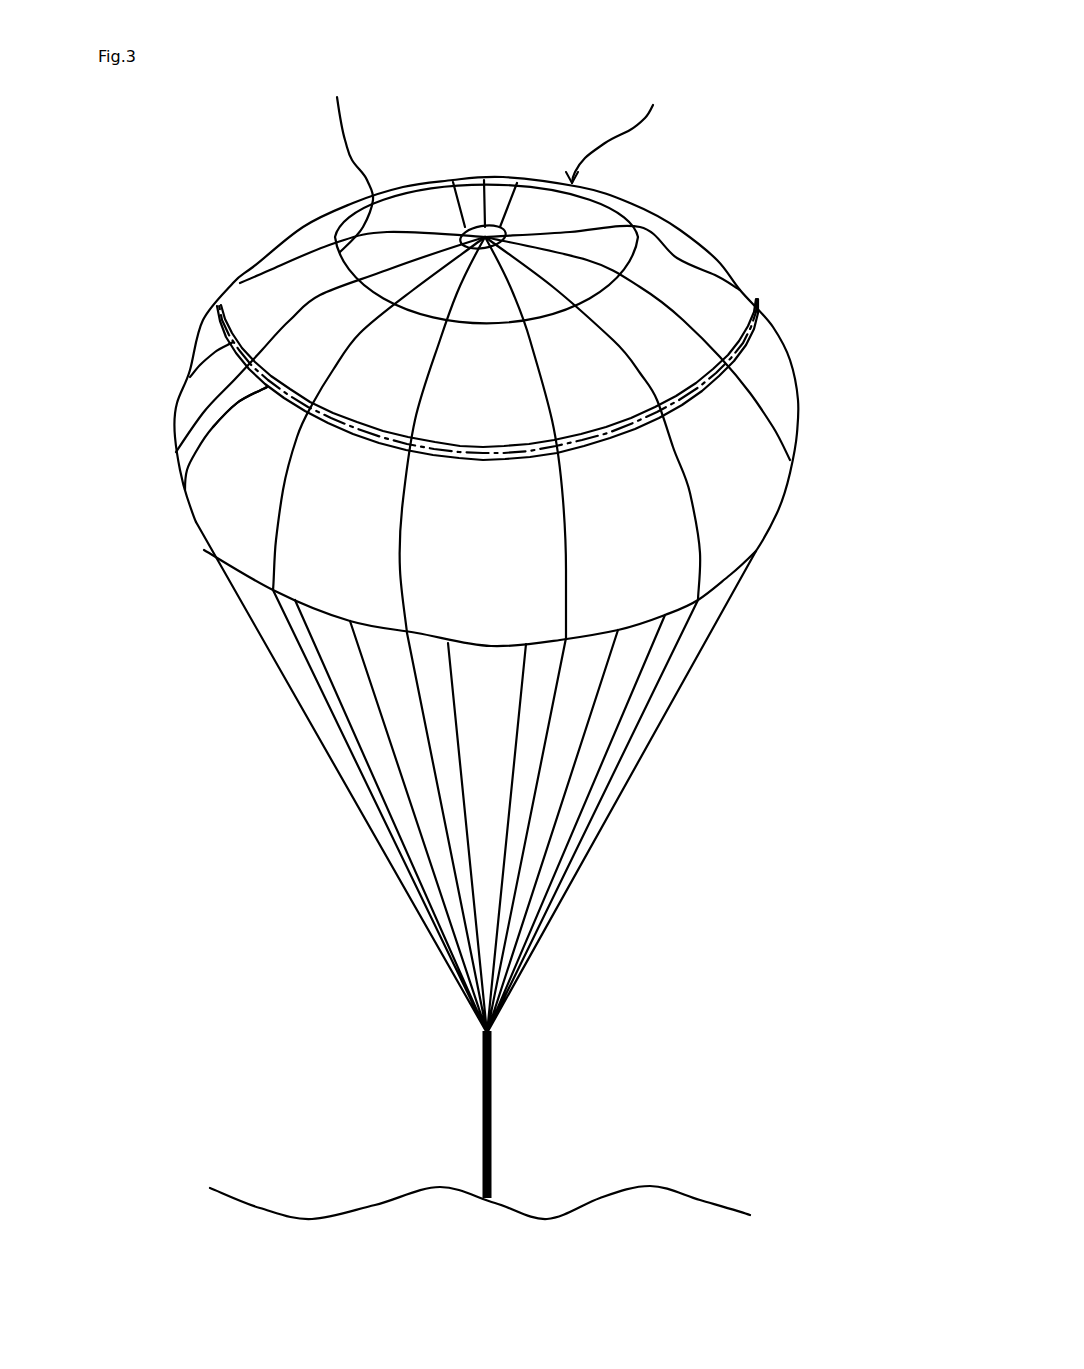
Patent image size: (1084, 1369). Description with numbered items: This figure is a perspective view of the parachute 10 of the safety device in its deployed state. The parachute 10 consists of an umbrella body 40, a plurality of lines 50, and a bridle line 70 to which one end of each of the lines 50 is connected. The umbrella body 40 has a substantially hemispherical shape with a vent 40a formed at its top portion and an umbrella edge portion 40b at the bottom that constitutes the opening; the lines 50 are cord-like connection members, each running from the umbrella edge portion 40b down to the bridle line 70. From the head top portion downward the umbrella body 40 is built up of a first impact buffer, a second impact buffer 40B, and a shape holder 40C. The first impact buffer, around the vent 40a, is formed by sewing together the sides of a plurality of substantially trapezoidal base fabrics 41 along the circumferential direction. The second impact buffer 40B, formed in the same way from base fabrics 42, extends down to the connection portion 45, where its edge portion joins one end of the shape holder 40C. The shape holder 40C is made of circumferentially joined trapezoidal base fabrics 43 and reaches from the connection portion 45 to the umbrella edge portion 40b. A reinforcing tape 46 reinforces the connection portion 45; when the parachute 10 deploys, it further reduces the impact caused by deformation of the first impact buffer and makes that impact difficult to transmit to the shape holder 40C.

The parachute 10 is at (707, 223).
The umbrella body 40 is at (253, 257).
The vent 40a is at (485, 227).
The second impact buffer 40B is at (713, 257).
The shape holder 40C is at (782, 340).
The umbrella edge portion 40b is at (710, 590).
The base fabrics 41 is at (387, 243).
The base fabrics 42 is at (303, 277).
The base fabrics 43 is at (230, 493).
The connection portion 45 is at (185, 380).
The reinforcing tape 46 is at (193, 443).
The lines 50 is at (300, 714).
The bridle line 70 is at (493, 1107).